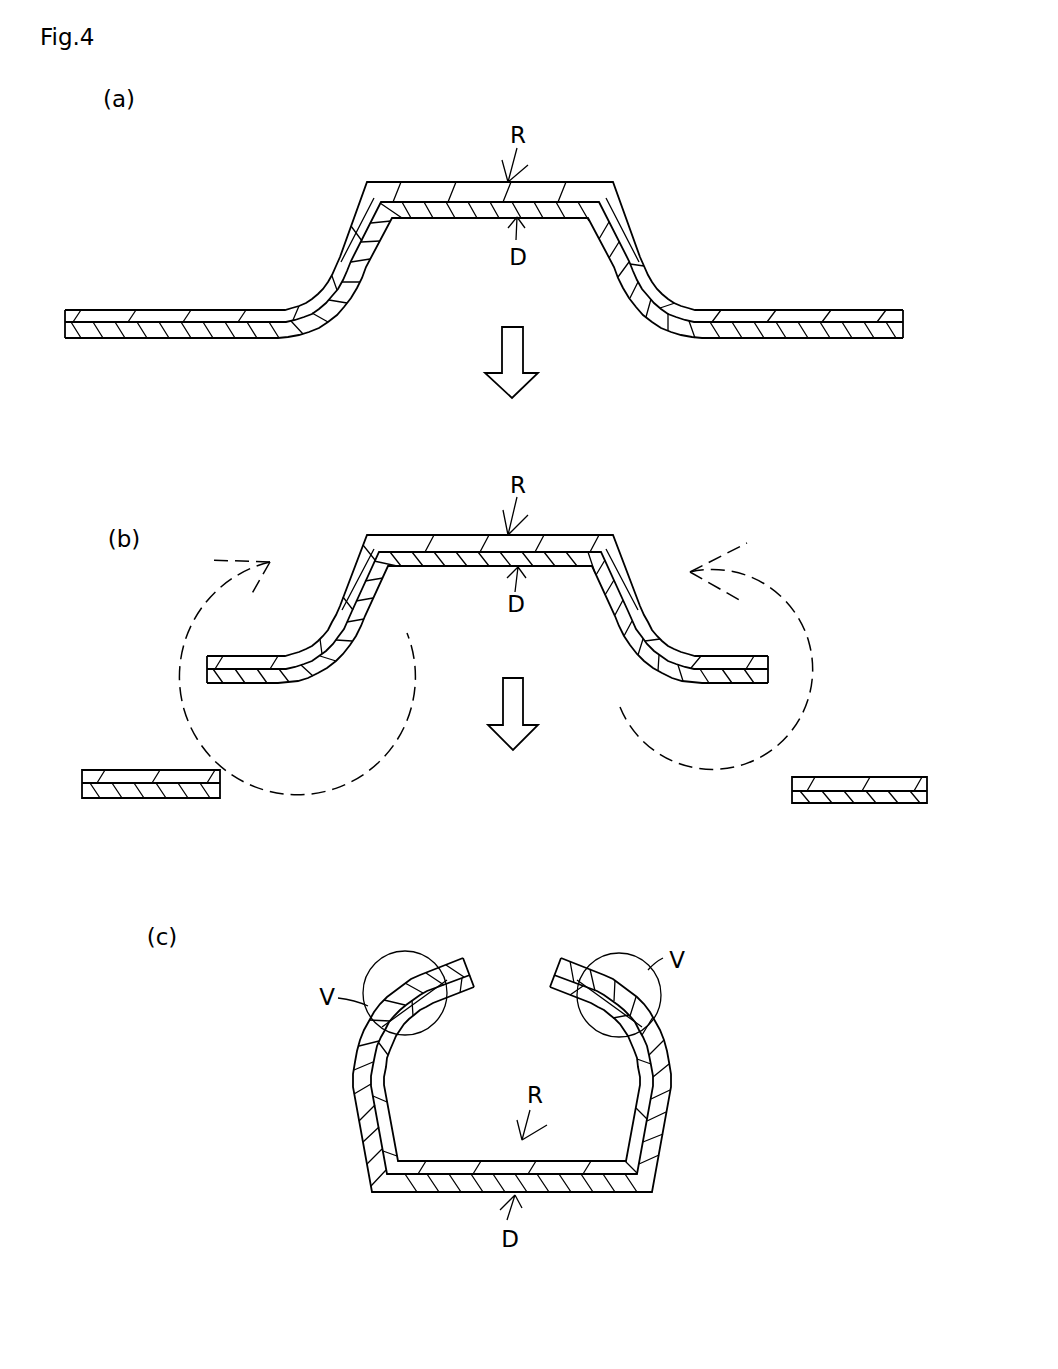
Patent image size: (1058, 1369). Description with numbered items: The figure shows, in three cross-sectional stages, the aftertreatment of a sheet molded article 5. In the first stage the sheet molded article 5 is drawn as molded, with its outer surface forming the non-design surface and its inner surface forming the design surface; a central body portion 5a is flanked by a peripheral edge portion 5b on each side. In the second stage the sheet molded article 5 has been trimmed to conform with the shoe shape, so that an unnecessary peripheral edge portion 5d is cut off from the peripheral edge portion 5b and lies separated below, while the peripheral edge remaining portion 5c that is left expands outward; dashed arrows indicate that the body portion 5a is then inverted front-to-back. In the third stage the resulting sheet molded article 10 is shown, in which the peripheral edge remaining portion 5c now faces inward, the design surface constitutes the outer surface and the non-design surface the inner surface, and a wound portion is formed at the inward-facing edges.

The sheet molded article 5 is at (375, 144).
The body portion 5a is at (647, 197).
The peripheral edge portion 5b is at (192, 272).
The peripheral edge remaining portion 5c is at (473, 935).
The unnecessary peripheral edge portion 5d is at (118, 770).
The sheet molded article 10 is at (487, 1030).